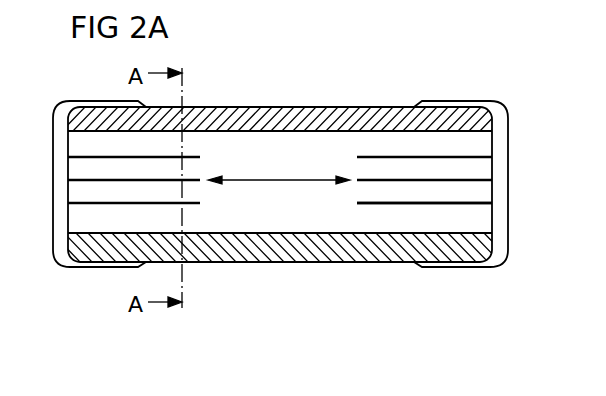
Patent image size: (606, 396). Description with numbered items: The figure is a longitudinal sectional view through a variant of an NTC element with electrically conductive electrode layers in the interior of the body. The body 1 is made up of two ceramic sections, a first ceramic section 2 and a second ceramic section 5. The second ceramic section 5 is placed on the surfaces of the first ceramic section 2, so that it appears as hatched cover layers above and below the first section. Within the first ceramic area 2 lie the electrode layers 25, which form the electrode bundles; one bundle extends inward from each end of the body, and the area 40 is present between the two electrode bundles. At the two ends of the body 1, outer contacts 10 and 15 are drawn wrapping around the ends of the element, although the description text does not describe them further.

The body 1 is at (411, 77).
The first ceramic section 2 is at (485, 145).
The second ceramic section 5 is at (252, 106).
The outer contact (right) 10 is at (500, 197).
The outer contact (left) 15 is at (66, 113).
The electrode layers 25 is at (392, 205).
The area 40 is at (300, 183).